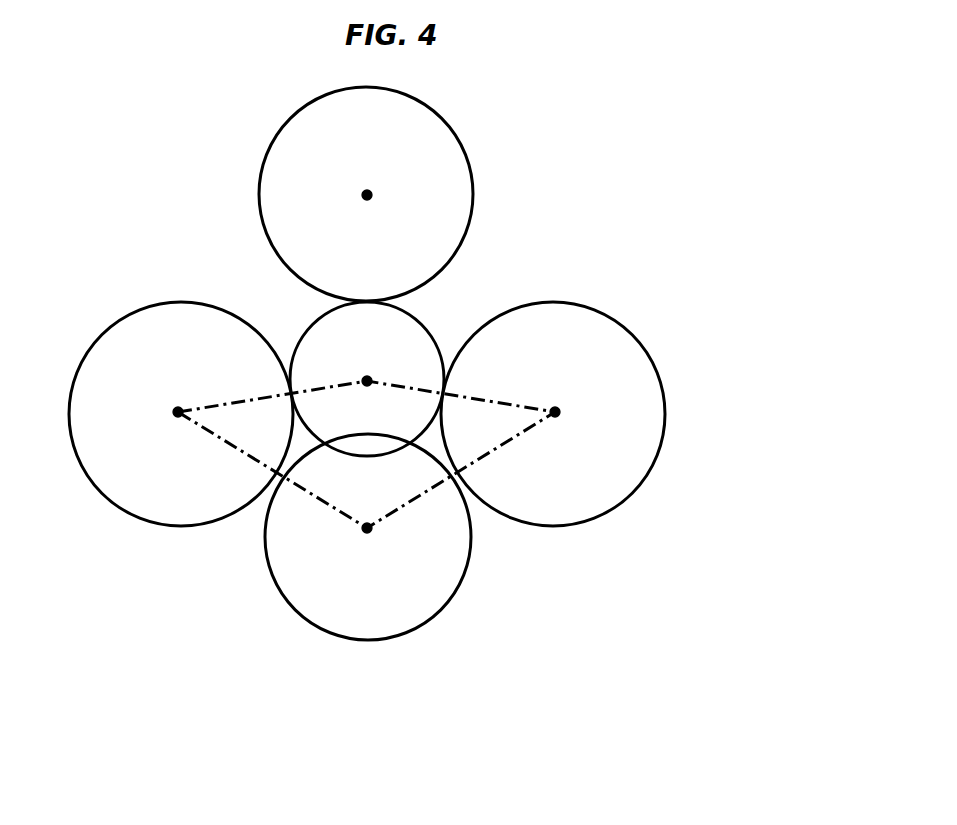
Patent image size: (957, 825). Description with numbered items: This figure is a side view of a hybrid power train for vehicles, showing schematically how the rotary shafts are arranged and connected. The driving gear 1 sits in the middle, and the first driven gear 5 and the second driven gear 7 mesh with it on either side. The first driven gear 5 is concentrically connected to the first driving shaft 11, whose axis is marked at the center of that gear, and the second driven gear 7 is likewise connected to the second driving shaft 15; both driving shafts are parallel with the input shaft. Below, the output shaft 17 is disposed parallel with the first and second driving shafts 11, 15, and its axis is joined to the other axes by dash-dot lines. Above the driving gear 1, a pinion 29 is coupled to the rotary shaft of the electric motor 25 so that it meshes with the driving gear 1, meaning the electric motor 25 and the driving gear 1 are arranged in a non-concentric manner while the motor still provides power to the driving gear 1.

The driving gear 1 is at (428, 325).
The first driven gear 5 is at (120, 322).
The second driven gear 7 is at (640, 343).
The first driving shaft 11 is at (178, 412).
The second driving shaft 15 is at (555, 412).
The output shaft 17 is at (367, 528).
The electric motor 25 is at (367, 195).
The pinion 29 is at (473, 168).